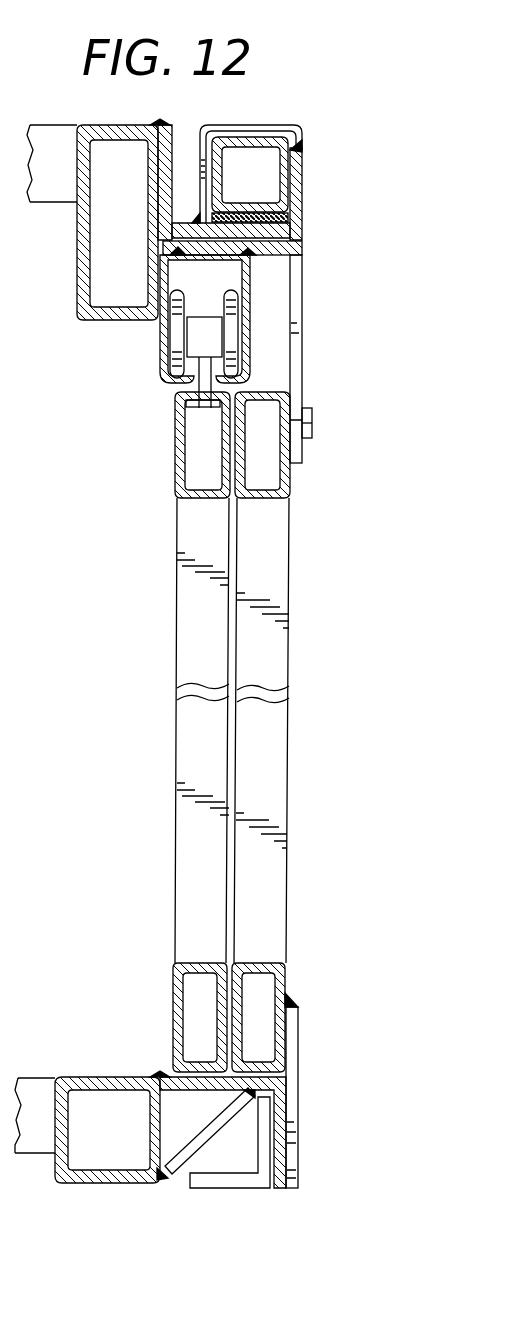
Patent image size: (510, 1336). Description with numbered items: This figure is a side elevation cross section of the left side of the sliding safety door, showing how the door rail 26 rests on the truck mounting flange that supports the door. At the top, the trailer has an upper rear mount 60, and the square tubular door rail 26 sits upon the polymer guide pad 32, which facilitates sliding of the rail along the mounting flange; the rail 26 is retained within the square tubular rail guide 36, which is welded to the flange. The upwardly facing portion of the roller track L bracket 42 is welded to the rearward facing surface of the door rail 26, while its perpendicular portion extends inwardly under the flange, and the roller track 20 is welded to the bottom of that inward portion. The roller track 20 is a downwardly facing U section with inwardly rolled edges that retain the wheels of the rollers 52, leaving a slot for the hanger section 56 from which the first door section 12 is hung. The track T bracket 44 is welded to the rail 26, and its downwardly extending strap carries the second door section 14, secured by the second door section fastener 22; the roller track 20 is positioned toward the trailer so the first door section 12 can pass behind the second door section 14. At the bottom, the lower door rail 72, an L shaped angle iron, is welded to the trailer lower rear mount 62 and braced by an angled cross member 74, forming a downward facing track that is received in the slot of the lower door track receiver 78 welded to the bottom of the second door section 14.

The first door section 12 is at (195, 540).
The second door section 14 is at (273, 543).
The roller track 20 is at (250, 273).
The second door section fastener 22 is at (312, 427).
The door rail 26 is at (275, 140).
The polymer guide pad 32 is at (288, 205).
The rail guide 36 is at (305, 132).
The roller track L bracket 42 is at (293, 242).
The track T bracket 44 is at (303, 355).
The roller 52 is at (228, 320).
The hanger section 56 is at (203, 378).
The trailer upper rear mount 60 is at (93, 320).
The trailer lower rear mount 62 is at (80, 1077).
The lower door rail 72 is at (283, 1085).
The cross member 74 is at (178, 1162).
The lower door track receiver 78 is at (298, 1042).